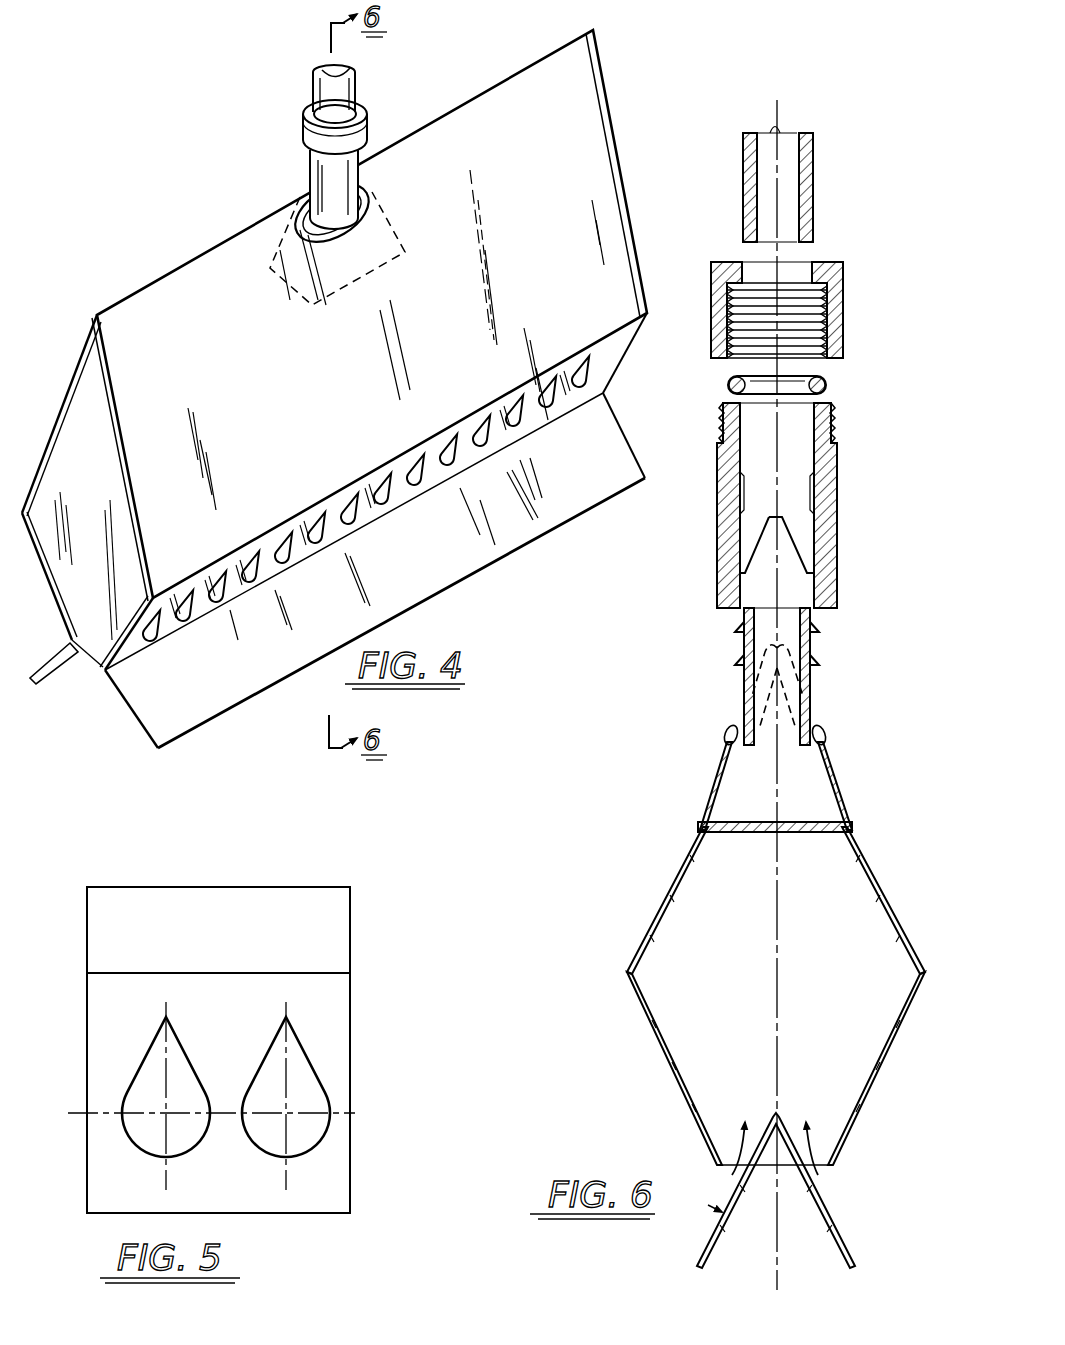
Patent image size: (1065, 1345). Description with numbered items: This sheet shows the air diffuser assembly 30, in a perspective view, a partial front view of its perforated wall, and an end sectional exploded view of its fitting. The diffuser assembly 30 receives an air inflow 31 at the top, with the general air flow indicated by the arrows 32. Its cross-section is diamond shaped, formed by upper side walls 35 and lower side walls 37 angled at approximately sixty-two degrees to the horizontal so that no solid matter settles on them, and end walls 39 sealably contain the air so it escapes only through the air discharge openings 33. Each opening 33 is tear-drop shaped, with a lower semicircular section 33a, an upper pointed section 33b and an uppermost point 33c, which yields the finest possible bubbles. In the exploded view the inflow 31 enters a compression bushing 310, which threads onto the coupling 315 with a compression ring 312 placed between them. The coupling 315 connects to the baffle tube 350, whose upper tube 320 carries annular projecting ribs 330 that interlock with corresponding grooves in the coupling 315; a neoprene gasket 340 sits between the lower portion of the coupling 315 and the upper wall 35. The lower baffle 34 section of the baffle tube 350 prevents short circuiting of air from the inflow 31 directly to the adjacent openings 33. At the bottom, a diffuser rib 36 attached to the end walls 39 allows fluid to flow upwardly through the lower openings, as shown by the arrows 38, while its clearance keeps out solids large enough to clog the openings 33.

In FIG. 4, the diffuser assembly 30 is at (334, 389).
In FIG. 5, the diffuser assembly 30 is at (350, 1007).
In FIG. 6, the diffuser assembly 30 is at (764, 987).
In FIG. 4, the air inflow 31 is at (340, 107).
In FIG. 6, the air inflow 31 is at (814, 178).
In FIG. 4, the arrows 32 is at (400, 230).
In FIG. 4, the air discharge openings 33 is at (446, 488).
In FIG. 5, the air discharge openings 33 is at (264, 1058).
In FIG. 5, the lower semicircular section 33a is at (328, 1132).
In FIG. 5, the upper pointed section 33b is at (323, 1082).
In FIG. 5, the point 33c is at (284, 1012).
In FIG. 6, the baffle 34 is at (726, 835).
In FIG. 6, the upper side walls 35 is at (688, 845).
In FIG. 6, the diffuser rib 36 is at (835, 1228).
In FIG. 6, the lower side walls 37 is at (668, 1060).
In FIG. 6, the arrows 38 is at (735, 1168).
In FIG. 4, the end walls 39 is at (90, 372).
In FIG. 6, the compression bushing 310 is at (842, 298).
In FIG. 6, the compression ring 312 is at (826, 385).
In FIG. 6, the coupling 315 is at (830, 505).
In FIG. 6, the upper tube 320 is at (812, 650).
In FIG. 6, the annular projecting ribs 330 is at (744, 655).
In FIG. 4, the gasket 340 is at (360, 200).
In FIG. 6, the gasket 340 is at (818, 733).
In FIG. 4, the baffle tube 350 is at (316, 300).
In FIG. 6, the baffle tube 350 is at (832, 770).